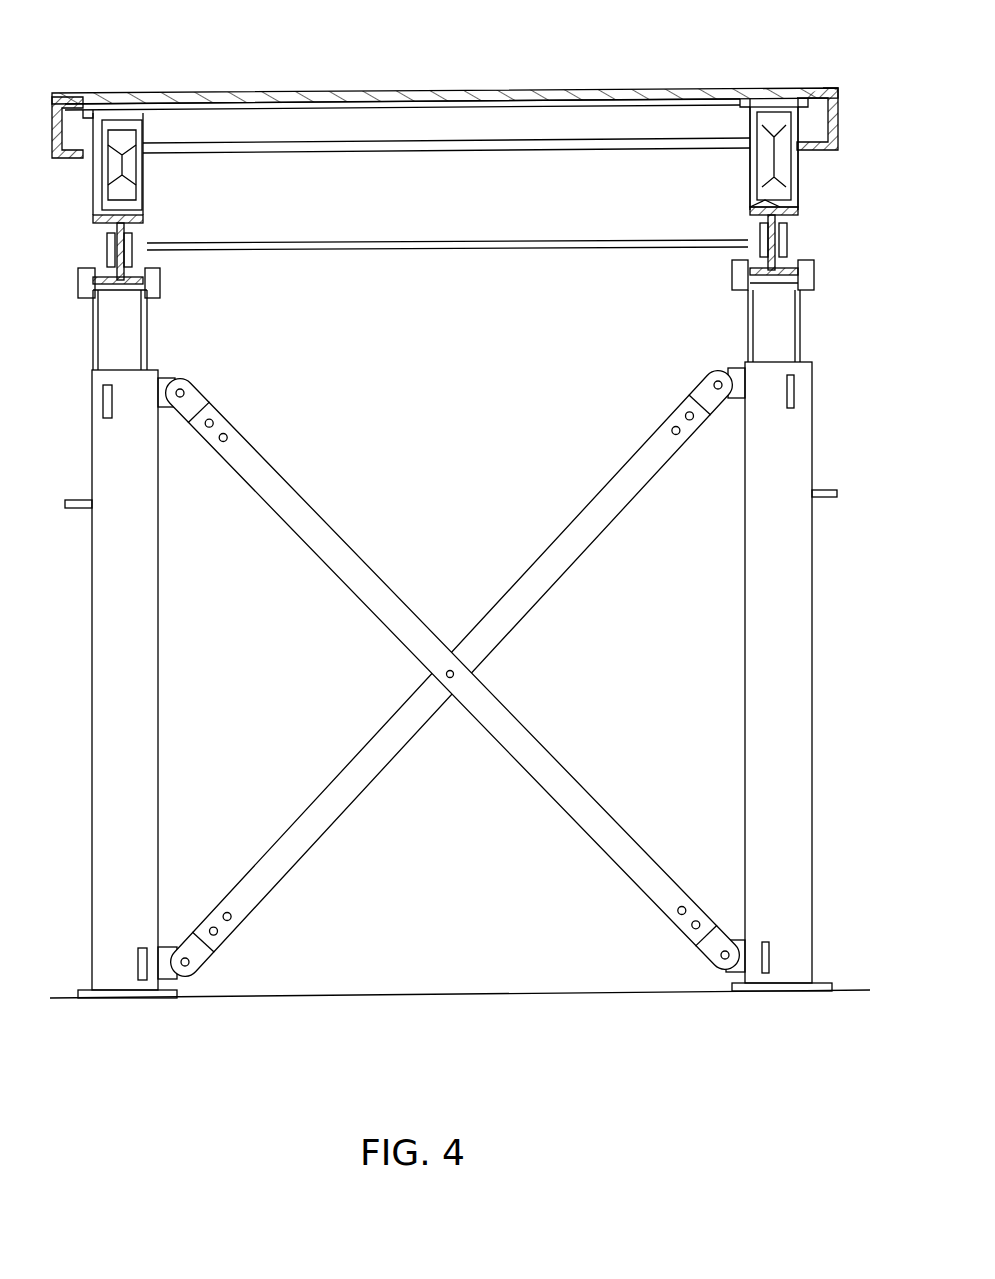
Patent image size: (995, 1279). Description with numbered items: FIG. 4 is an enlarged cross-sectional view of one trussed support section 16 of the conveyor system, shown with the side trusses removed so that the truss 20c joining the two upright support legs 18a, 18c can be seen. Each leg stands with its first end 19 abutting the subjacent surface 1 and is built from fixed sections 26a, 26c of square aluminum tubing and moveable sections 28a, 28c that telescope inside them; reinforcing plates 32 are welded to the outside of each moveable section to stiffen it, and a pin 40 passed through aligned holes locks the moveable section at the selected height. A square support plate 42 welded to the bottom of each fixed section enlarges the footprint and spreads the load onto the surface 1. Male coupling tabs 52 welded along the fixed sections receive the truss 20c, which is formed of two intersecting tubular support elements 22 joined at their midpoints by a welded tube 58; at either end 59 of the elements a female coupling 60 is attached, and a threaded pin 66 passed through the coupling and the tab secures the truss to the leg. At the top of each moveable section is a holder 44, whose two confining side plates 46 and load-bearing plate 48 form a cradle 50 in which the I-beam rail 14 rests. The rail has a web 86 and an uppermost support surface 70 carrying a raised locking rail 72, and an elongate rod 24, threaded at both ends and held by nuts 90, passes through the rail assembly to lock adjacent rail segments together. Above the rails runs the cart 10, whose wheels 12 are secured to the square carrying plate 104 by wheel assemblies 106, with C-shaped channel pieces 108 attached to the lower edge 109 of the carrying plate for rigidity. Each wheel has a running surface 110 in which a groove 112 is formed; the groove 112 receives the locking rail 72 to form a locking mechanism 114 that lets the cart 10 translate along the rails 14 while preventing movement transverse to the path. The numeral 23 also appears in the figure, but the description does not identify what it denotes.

The subjacent surface 1 is at (446, 1058).
The cart 10 is at (430, 85).
The wheels 12 is at (130, 188).
The rails 14 is at (125, 230).
The trussed support section 16 is at (70, 948).
The upright support leg 18a is at (740, 705).
The upright support leg 18c is at (165, 755).
The first end of support segment 19 is at (270, 945).
The truss 20c is at (453, 705).
The tubular support element 22 is at (315, 838).
The upper frame assembly 23 is at (640, 205).
The elongate rod 24 is at (455, 252).
The fixed section 26a is at (805, 825).
The fixed section 26c is at (110, 828).
The moveable section 28a is at (780, 335).
The moveable section 28c is at (120, 340).
The reinforcing plates 32 is at (760, 312).
The pin 40 is at (830, 497).
The support plate 42 is at (100, 998).
The holder 44 is at (78, 285).
The confining side plates 46 is at (155, 281).
The load-bearing plate 48 is at (130, 292).
The cradle 50 is at (140, 278).
The male coupling tabs 52 is at (157, 403).
The tube 58 is at (453, 672).
The end of tubular element 59 is at (235, 398).
The female coupling 60 is at (200, 395).
The pin 66 is at (182, 390).
The uppermost support surface 70 is at (140, 215).
The locking rail 72 is at (780, 211).
The web 86 is at (745, 262).
The nuts 90 is at (107, 245).
The carrying plate 104 is at (555, 92).
The wheel assemblies 106 is at (752, 122).
The C-shaped channel pieces 108 is at (423, 152).
The lower edge of carrying plate 109 is at (690, 100).
The running surface 110 is at (765, 208).
The groove 112 is at (771, 125).
The locking mechanism 114 is at (95, 190).